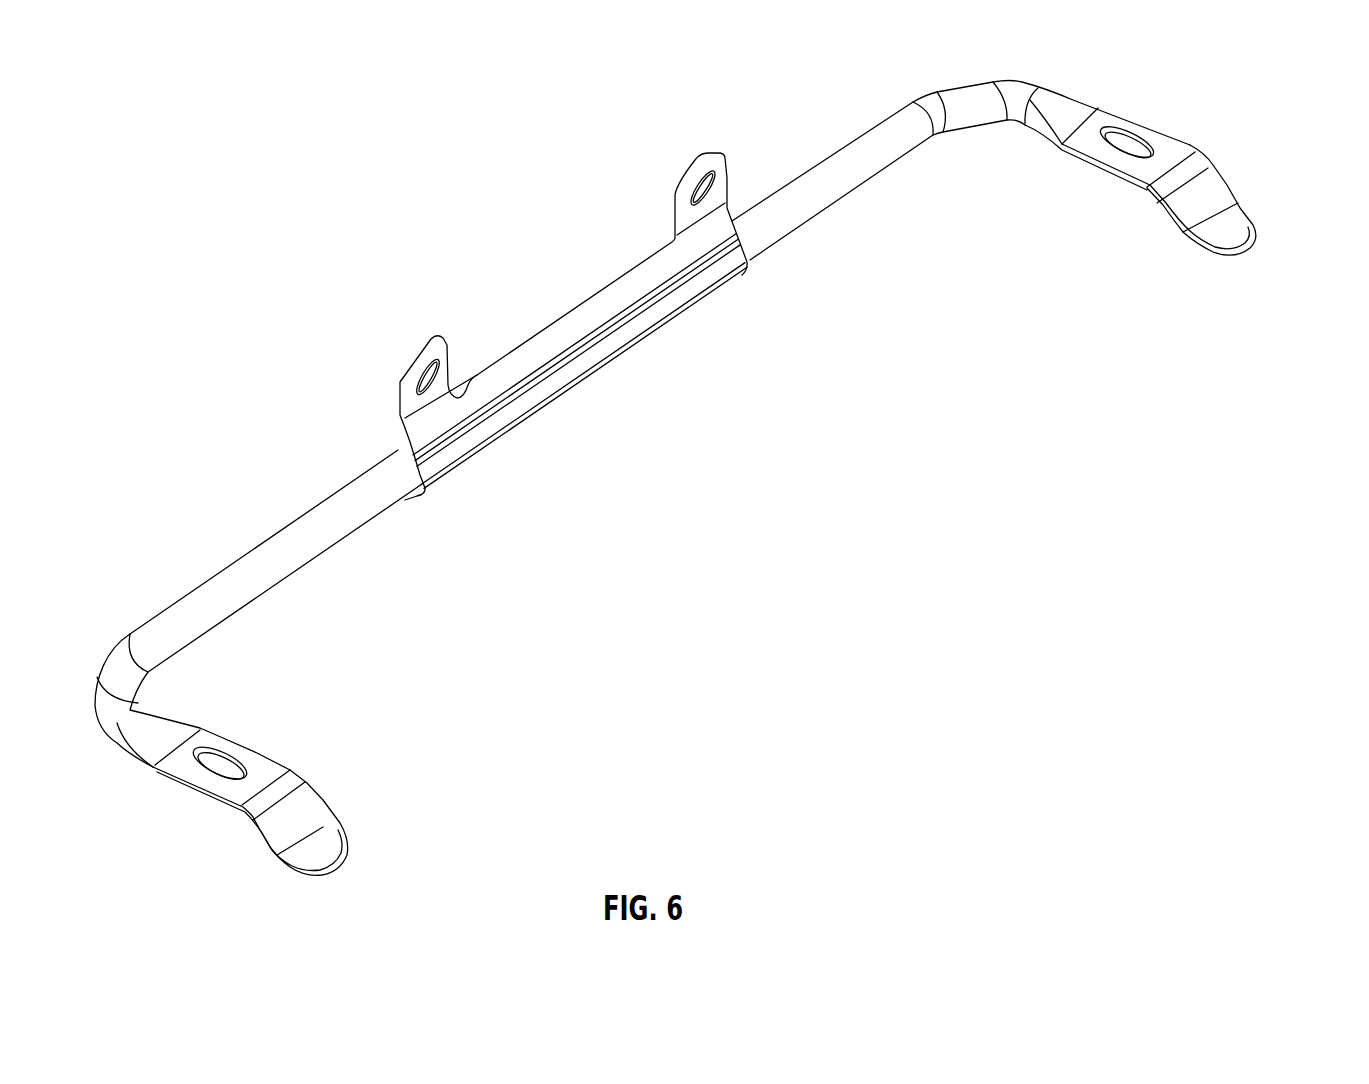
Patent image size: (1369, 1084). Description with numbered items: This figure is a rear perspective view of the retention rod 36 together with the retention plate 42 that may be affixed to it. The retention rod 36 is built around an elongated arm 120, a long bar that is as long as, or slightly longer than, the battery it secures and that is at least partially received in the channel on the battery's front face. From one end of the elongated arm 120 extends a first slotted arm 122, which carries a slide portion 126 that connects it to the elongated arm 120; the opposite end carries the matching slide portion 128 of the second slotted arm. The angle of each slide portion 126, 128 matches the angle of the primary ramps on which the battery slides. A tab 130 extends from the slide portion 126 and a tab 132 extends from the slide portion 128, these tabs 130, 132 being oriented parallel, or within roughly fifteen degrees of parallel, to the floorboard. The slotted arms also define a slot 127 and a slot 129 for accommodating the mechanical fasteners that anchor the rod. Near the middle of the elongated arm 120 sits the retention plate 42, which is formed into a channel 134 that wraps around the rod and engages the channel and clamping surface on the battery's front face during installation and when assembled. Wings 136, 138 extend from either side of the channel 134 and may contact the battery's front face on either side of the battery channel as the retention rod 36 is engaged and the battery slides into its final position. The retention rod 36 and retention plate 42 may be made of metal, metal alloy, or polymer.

The retention rod 36 is at (702, 474).
The retention plate 42 is at (573, 343).
The elongated arm 120 is at (1113, 118).
The first slotted arm 122 is at (250, 796).
The slide portion 126 is at (283, 821).
The slot 127 is at (223, 758).
The slide portion 128 is at (1189, 178).
The slot 129 is at (1130, 143).
The tab 130 is at (337, 853).
The tab 132 is at (1240, 230).
The channel 134 is at (478, 450).
The wing 136 is at (407, 498).
The wing 138 is at (523, 367).